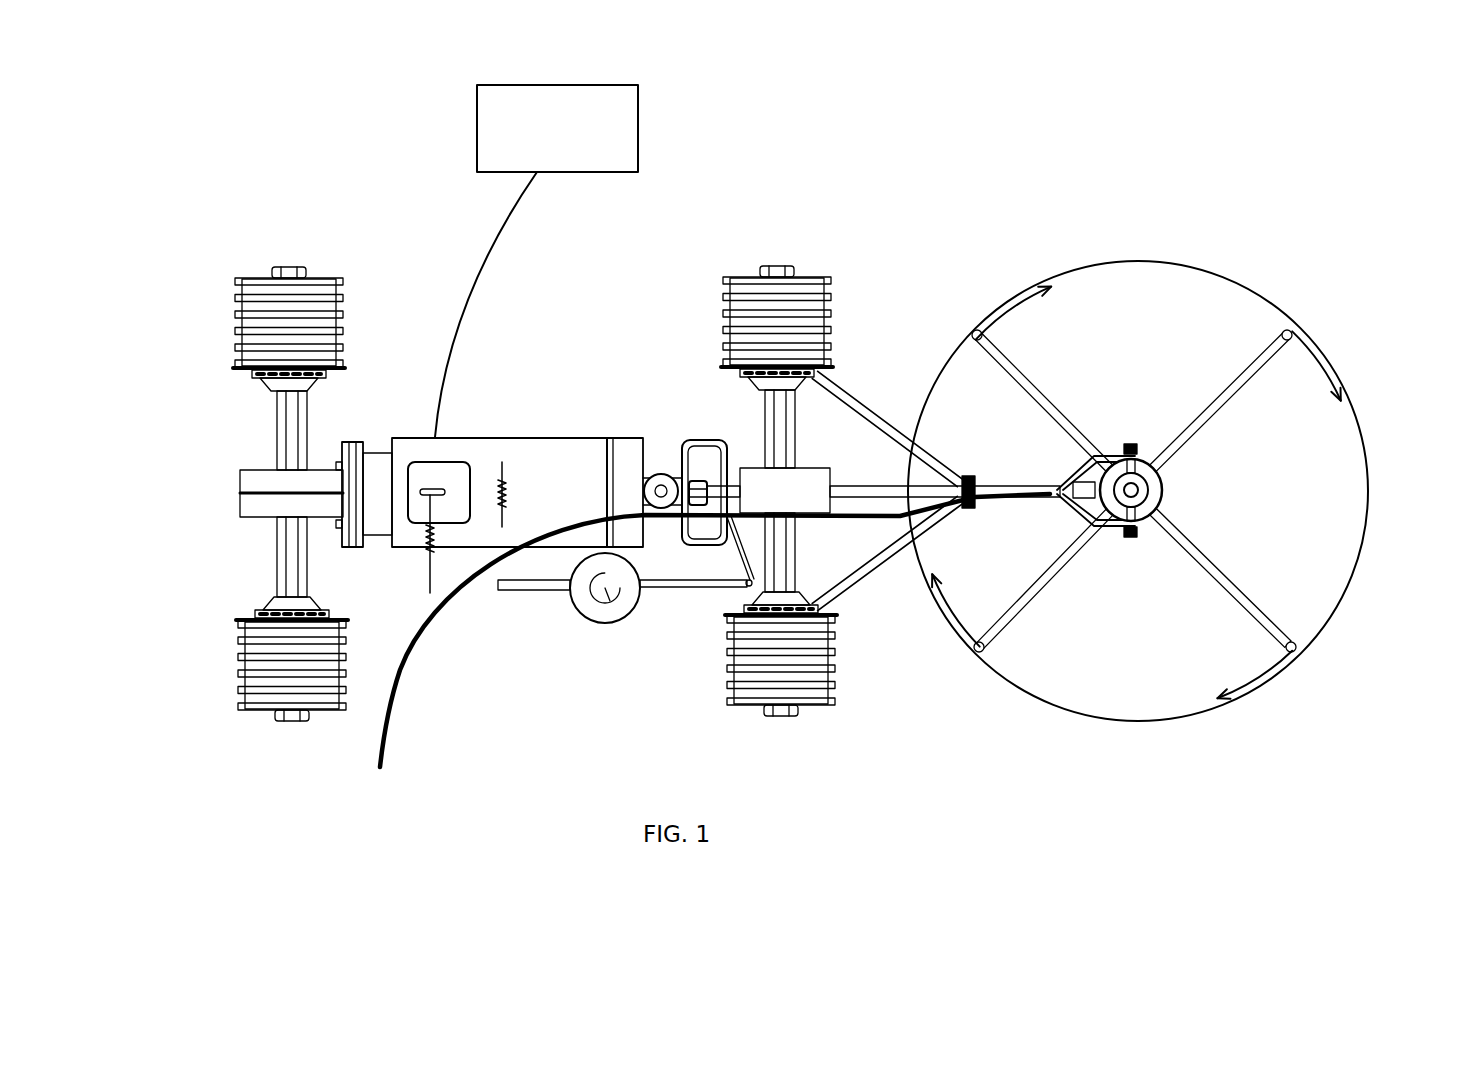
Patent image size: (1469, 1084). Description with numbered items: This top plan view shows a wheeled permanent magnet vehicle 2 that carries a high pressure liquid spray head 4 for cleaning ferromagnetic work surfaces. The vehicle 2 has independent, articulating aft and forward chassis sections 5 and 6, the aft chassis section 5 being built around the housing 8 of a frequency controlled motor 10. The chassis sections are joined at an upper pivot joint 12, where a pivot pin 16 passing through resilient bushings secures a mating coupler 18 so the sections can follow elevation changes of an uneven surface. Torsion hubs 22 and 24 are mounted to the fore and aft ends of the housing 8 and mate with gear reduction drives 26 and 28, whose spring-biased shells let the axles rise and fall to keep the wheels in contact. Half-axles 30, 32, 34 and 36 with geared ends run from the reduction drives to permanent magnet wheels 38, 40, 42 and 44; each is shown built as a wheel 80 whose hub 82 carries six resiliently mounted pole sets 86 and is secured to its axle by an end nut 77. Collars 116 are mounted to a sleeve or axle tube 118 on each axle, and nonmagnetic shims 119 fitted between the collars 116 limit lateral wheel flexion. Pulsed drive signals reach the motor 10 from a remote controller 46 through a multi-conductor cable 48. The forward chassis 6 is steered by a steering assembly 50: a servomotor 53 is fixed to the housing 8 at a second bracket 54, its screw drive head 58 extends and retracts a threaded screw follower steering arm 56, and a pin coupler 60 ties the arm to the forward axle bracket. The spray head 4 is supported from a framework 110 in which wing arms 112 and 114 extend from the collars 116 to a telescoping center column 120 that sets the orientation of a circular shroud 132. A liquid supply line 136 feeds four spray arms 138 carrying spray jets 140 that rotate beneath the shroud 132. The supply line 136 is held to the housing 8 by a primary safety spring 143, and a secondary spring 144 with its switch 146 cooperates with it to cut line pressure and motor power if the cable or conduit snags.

The wheeled permanent magnet vehicle 2 is at (478, 317).
The high pressure liquid spray head 4 is at (1183, 474).
The aft chassis section 5 is at (485, 437).
The forward chassis section 6 is at (690, 444).
The housing 8 is at (530, 438).
The frequency controlled motor 10 is at (638, 440).
The upper pivot joint 12 is at (628, 484).
The pivot pin 16 is at (660, 474).
The mating coupler 18 is at (696, 478).
The torsion hub 22 is at (728, 443).
The torsion hub 24 is at (345, 542).
The gear reduction drive 26 is at (795, 478).
The gear reduction drive 28 is at (240, 480).
The half-axle 30 is at (782, 430).
The half-axle 32 is at (792, 552).
The half-axle 34 is at (285, 418).
The half-axle 36 is at (290, 556).
The permanent magnet wheel 38 is at (722, 297).
The permanent magnet wheel 40 is at (820, 712).
The permanent magnet wheel 42 is at (235, 650).
The permanent magnet wheel 44 is at (233, 300).
The remote controller 46 is at (628, 112).
The multi-conductor cable 48 is at (455, 343).
The steering assembly 50 is at (569, 627).
The servomotor 53 is at (583, 600).
The second bracket 54 is at (572, 554).
The threaded screw follower steering arm 56 is at (520, 590).
The screw drive head 58 is at (607, 598).
The pin coupler 60 is at (745, 585).
The end nut 77 is at (290, 722).
The wheel 80 is at (345, 277).
The hub 82 is at (839, 625).
The pole sets 86 is at (345, 283).
The framework 110 is at (887, 421).
The wing arm 112 is at (840, 402).
The wing arm 114 is at (890, 545).
The collars 116 is at (305, 388).
The sleeve or axle tube 118 is at (300, 422).
The nonmagnetic shims 119 is at (250, 372).
The telescoping center column 120 is at (882, 485).
The circular shroud 132 is at (1367, 478).
The liquid supply line 136 is at (400, 700).
The spray arms 138 is at (1186, 432).
The spray orifices or jets 140 is at (985, 338).
The primary safety spring 143 is at (507, 495).
The secondary spring 144 is at (417, 548).
The switch 146 is at (442, 474).